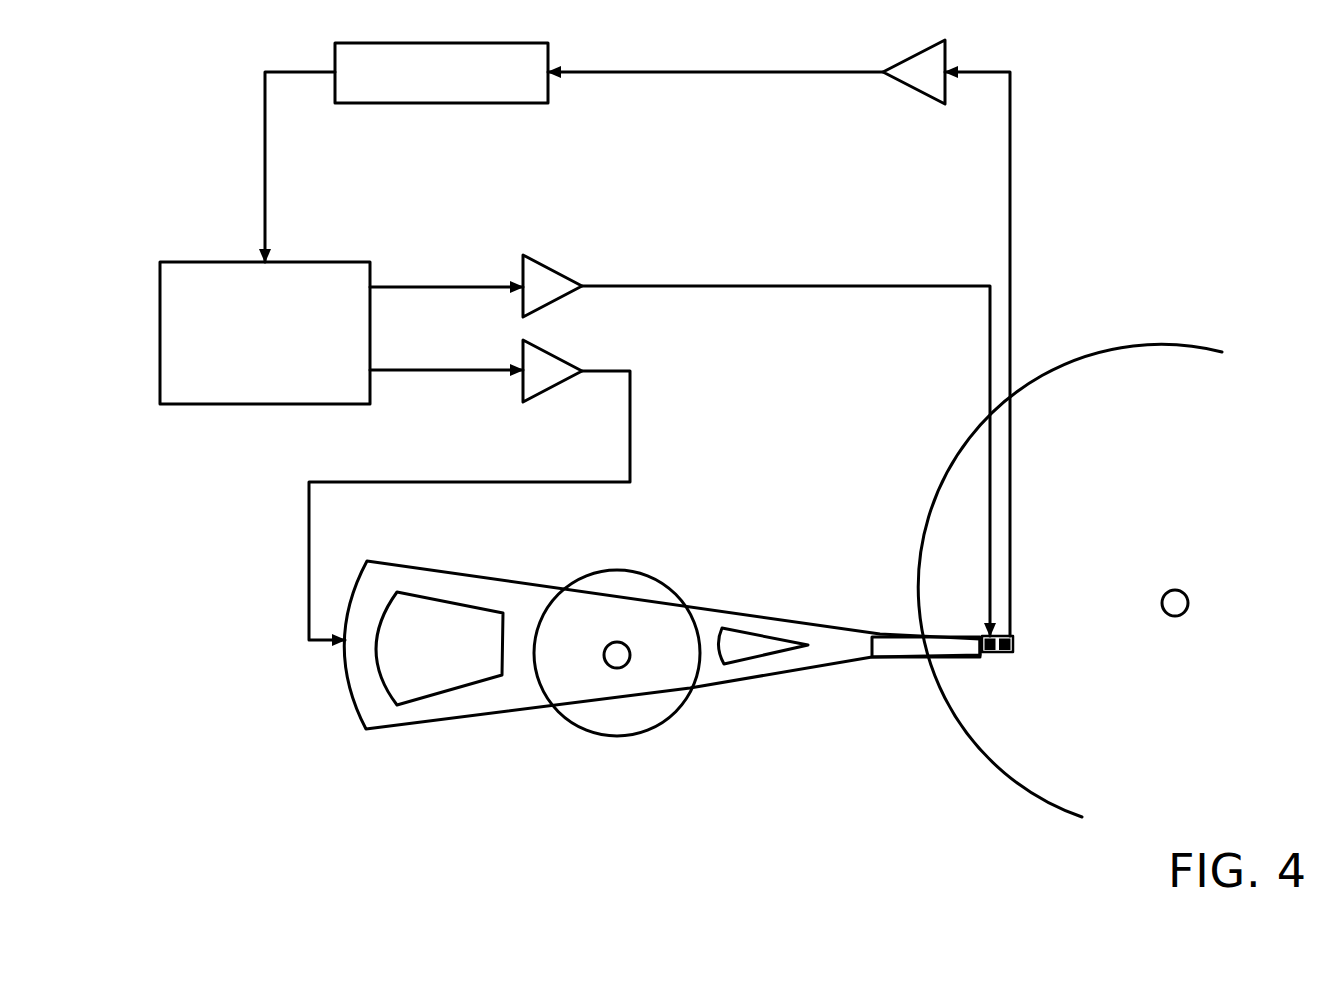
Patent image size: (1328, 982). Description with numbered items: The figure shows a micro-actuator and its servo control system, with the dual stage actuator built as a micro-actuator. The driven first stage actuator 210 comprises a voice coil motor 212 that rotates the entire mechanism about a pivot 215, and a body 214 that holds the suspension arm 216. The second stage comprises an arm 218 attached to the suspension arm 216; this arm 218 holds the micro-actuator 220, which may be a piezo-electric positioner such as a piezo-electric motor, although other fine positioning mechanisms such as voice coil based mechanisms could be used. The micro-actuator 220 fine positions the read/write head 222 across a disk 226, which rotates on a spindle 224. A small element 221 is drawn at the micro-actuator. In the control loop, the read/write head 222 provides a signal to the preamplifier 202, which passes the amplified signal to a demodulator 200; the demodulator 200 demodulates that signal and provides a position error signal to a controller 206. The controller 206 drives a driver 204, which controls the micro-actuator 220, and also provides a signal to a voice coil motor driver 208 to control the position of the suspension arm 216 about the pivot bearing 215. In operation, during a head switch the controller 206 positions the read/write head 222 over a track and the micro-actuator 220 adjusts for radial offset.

The demodulator 200 is at (441, 103).
The preamplifier 202 is at (905, 61).
The driver 204 is at (525, 258).
The controller 206 is at (310, 262).
The voice coil motor driver 208 is at (530, 397).
The first stage actuator 210 is at (713, 685).
The voice coil motor 212 is at (412, 572).
The body 214 is at (622, 580).
The pivot 215 is at (617, 655).
The suspension arm 216 is at (793, 671).
The arm 218 is at (908, 646).
The micro-actuator 220 is at (982, 660).
The microactuator 221 is at (985, 637).
The read/write head 222 is at (1041, 637).
The spindle 224 is at (1175, 616).
The disk 226 is at (1070, 756).